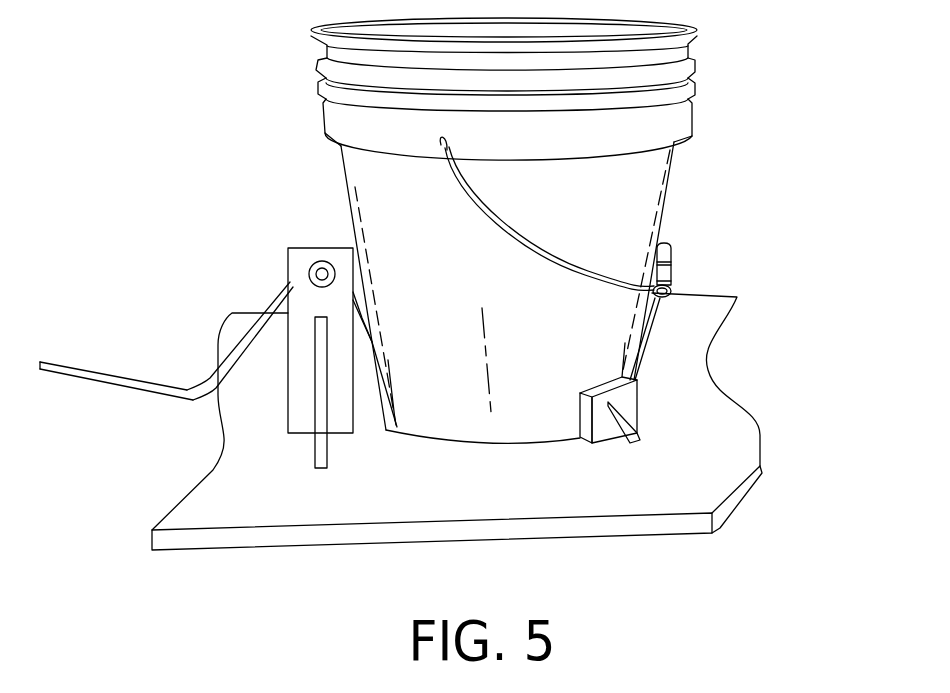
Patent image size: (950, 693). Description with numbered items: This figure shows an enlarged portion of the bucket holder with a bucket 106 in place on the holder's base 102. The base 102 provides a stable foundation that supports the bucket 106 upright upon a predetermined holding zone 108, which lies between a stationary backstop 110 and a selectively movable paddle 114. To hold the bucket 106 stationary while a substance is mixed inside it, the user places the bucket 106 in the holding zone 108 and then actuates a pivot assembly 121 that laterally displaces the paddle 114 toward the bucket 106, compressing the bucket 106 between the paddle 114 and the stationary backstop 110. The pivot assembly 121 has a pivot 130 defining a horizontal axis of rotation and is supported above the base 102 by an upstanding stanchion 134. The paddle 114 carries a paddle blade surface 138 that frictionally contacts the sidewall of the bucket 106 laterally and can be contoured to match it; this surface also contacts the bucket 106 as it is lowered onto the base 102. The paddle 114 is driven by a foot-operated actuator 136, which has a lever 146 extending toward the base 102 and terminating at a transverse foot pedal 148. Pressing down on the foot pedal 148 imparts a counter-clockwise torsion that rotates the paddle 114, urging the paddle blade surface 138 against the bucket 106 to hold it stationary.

The base 102 is at (250, 522).
The bucket 106 is at (617, 199).
The holding zone 108 is at (475, 463).
The stationary backstop 110 is at (630, 396).
The paddle 114 is at (372, 393).
The pivot assembly 121 is at (308, 241).
The pivot 130 is at (338, 272).
The stanchion 134 is at (343, 258).
The actuator 136 is at (192, 366).
The paddle blade surface 138 is at (372, 342).
The lever 146 is at (283, 287).
The foot pedal 148 is at (92, 373).